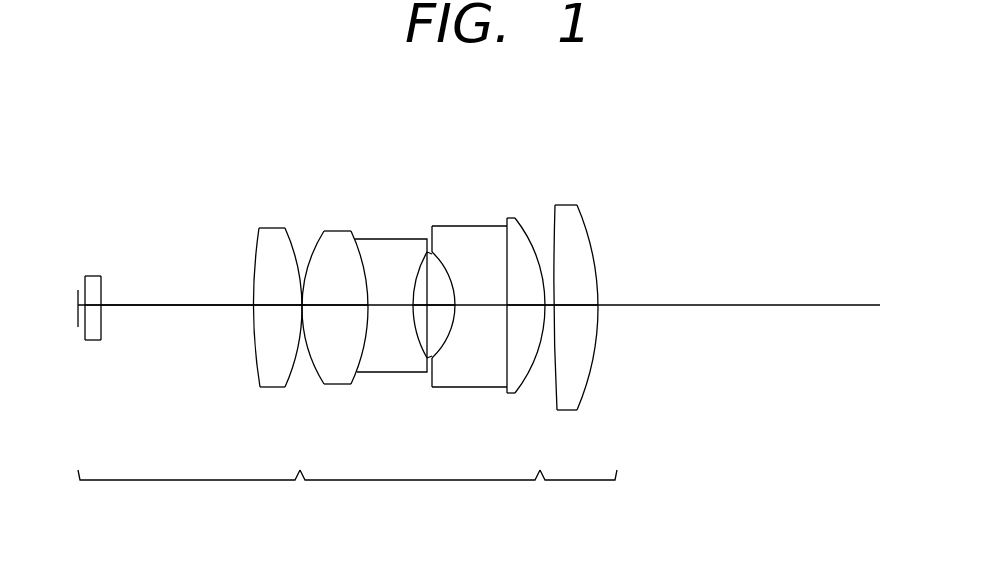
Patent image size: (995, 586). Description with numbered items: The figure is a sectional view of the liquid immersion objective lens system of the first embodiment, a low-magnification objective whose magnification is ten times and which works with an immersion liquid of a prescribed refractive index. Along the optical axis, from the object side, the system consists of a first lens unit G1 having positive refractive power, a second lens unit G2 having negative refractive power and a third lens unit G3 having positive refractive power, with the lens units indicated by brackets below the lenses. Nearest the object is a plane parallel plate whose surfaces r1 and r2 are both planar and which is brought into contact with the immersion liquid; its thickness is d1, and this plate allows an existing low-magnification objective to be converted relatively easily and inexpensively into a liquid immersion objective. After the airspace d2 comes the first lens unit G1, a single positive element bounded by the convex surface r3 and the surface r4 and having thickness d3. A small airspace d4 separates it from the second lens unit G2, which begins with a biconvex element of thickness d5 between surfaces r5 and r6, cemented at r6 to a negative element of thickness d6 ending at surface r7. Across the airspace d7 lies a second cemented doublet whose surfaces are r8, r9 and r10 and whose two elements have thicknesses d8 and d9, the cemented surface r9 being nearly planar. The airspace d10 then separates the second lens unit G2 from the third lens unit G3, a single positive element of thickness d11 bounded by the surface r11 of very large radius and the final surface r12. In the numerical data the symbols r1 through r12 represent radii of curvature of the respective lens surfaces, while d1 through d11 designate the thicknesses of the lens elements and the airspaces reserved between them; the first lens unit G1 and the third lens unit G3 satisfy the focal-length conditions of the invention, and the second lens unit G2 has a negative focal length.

The radius of curvature of first lens surface r1 is at (85, 284).
The radius of curvature of second lens surface r2 is at (102, 285).
The radius of curvature of third lens surface r3 is at (253, 263).
The radius of curvature of fourth lens surface r4 is at (293, 233).
The radius of curvature of fifth lens surface r5 is at (323, 235).
The radius of curvature of sixth lens surface r6 is at (365, 247).
The radius of curvature of seventh lens surface r7 is at (416, 268).
The radius of curvature of eighth lens surface r8 is at (452, 255).
The radius of curvature of ninth lens surface r9 is at (503, 253).
The radius of curvature of tenth lens surface r10 is at (533, 238).
The radius of curvature of eleventh lens surface r11 is at (553, 217).
The radius of curvature of twelfth lens surface r12 is at (590, 230).
The thickness of plane parallel plate d1 is at (90, 310).
The airspace between plate and first lens unit d2 is at (168, 308).
The thickness of first lens unit element d3 is at (270, 308).
The airspace between first and second lens units d4 is at (301, 313).
The thickness of biconvex element d5 is at (328, 308).
The thickness of cemented negative element d6 is at (387, 308).
The airspace within second lens unit d7 is at (415, 308).
The thickness of first element of second doublet d8 is at (473, 308).
The thickness of second element of second doublet d9 is at (523, 307).
The airspace between second and third lens units d10 is at (548, 307).
The thickness of third lens unit element d11 is at (582, 307).
The first lens unit G1 is at (189, 493).
The second lens unit G2 is at (420, 493).
The third lens unit G3 is at (578, 493).